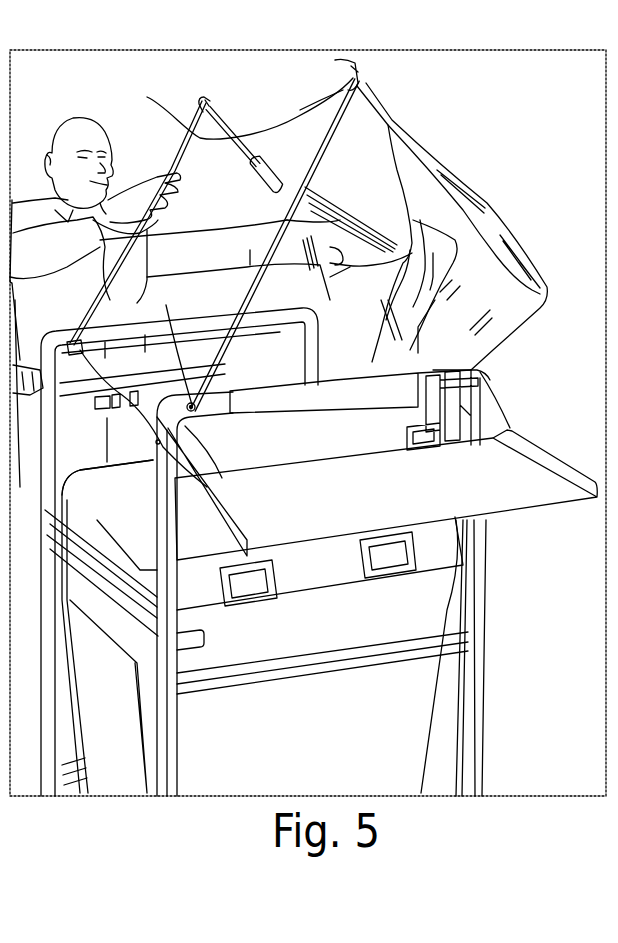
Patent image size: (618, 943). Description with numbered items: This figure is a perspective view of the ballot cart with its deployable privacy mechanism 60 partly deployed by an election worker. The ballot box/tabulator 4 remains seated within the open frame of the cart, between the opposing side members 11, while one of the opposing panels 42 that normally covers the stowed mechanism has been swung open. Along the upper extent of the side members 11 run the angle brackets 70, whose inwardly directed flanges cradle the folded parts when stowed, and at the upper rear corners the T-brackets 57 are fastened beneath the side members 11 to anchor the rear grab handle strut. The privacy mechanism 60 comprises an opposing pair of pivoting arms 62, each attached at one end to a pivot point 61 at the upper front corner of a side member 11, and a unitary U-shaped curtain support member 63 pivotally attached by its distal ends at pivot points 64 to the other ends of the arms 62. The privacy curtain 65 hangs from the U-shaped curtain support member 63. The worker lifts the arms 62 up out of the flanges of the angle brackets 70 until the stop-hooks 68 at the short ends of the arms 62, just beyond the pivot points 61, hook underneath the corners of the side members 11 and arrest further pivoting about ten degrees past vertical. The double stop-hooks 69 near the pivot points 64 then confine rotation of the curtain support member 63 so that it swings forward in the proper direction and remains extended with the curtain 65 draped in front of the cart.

The ballot box/tabulator 4 is at (440, 672).
The side members 11 is at (157, 512).
The opposing panels 42 is at (392, 500).
The T-brackets 57 is at (472, 378).
The deployable privacy mechanism 60 is at (233, 118).
The pivot points 61 is at (82, 342).
The pivoting arms 62 is at (314, 157).
The U-shaped curtain support member 63 is at (381, 103).
The pivot points 64 is at (210, 107).
The privacy curtain 65 is at (287, 220).
The stop-hook 68 is at (178, 413).
The double stop-hook 69 is at (197, 104).
The angle brackets 70 is at (408, 406).